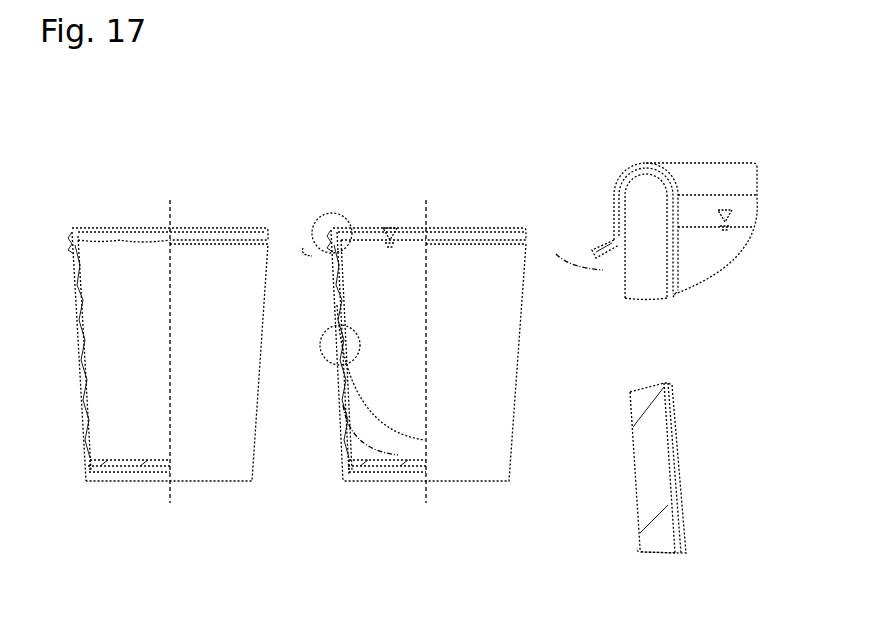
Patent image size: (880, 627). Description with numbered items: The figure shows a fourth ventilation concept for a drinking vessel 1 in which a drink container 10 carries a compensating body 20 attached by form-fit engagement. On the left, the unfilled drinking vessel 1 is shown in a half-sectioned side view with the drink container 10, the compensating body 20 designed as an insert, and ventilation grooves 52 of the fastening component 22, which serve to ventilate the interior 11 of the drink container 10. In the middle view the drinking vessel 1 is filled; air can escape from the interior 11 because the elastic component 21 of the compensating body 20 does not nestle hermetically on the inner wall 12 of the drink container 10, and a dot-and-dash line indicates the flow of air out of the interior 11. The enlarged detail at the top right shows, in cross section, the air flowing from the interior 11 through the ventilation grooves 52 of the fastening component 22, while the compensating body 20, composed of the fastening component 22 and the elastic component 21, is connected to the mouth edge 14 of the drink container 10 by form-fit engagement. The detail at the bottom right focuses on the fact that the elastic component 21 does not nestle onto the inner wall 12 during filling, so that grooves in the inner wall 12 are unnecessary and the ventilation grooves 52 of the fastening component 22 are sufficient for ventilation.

The drinking vessel 1 is at (234, 190).
The drink container 10 is at (76, 341).
The interior 11 is at (128, 438).
The inner wall 12 is at (350, 430).
The mouth edge 14 is at (643, 185).
The compensating body 20 is at (178, 222).
The elastic component 21 is at (137, 238).
The fastening component 22 is at (727, 195).
The ventilation grooves 52 is at (72, 230).